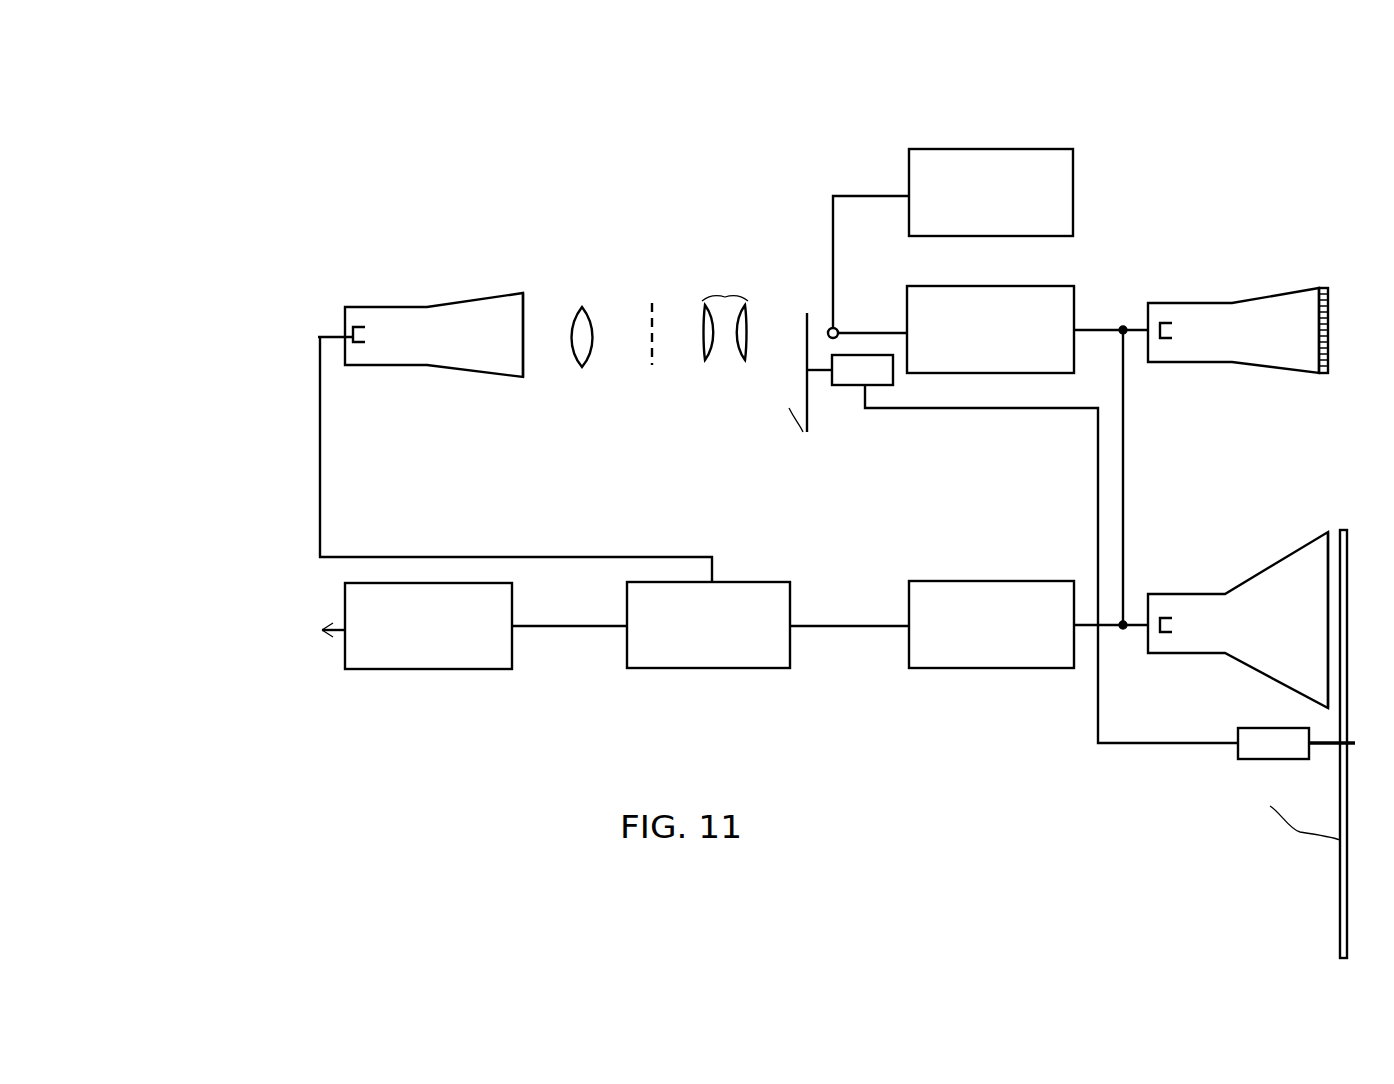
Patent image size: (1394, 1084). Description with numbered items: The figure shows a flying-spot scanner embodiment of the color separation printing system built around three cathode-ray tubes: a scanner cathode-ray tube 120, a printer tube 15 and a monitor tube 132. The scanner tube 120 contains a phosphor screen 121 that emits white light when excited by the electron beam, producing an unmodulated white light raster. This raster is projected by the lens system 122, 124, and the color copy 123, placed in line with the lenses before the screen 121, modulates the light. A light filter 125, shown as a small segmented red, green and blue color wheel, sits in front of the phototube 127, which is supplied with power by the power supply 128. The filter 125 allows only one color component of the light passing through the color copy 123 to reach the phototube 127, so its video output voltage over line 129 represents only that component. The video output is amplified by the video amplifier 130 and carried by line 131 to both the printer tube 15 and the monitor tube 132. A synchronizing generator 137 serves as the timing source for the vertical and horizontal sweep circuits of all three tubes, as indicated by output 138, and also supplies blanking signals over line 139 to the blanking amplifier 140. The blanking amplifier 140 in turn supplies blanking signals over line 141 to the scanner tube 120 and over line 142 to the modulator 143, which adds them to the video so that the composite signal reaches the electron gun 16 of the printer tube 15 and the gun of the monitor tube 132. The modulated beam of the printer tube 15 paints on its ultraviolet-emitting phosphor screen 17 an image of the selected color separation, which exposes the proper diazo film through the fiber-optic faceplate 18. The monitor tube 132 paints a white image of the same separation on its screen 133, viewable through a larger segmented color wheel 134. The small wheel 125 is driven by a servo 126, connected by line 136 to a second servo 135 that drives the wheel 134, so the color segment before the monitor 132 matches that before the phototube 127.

The printer cathode-ray tube 15 is at (1235, 301).
The electron gun 16 is at (1170, 323).
The phosphor screen 17 is at (1318, 320).
The fiber-optic faceplate 18 is at (1330, 333).
The scanner cathode-ray tube 120 is at (378, 307).
The phosphor screen 121 is at (520, 330).
The lens system 122 is at (581, 307).
The color copy 123 is at (652, 303).
The lens system 124 is at (730, 296).
The light filter 125 is at (803, 430).
The servo 126 is at (855, 387).
The phototube 127 is at (838, 328).
The power supply 128 is at (1031, 125).
The lead 129 is at (866, 333).
The video amplifier 130 is at (1096, 274).
The lead 131 is at (1124, 515).
The monitor cathode-ray tube 132 is at (1200, 594).
The screen 133 is at (1325, 585).
The color wheel 134 is at (1340, 886).
The monitor servo 135 is at (1237, 757).
The servo lead 136 is at (1040, 412).
The synchronizing generator 137 is at (452, 671).
The sync output lead 138 is at (335, 640).
The line 139 is at (551, 628).
The blanking amplifier 140 is at (700, 670).
The line 141 is at (462, 557).
The line 142 is at (835, 628).
The modulator 143 is at (1002, 670).